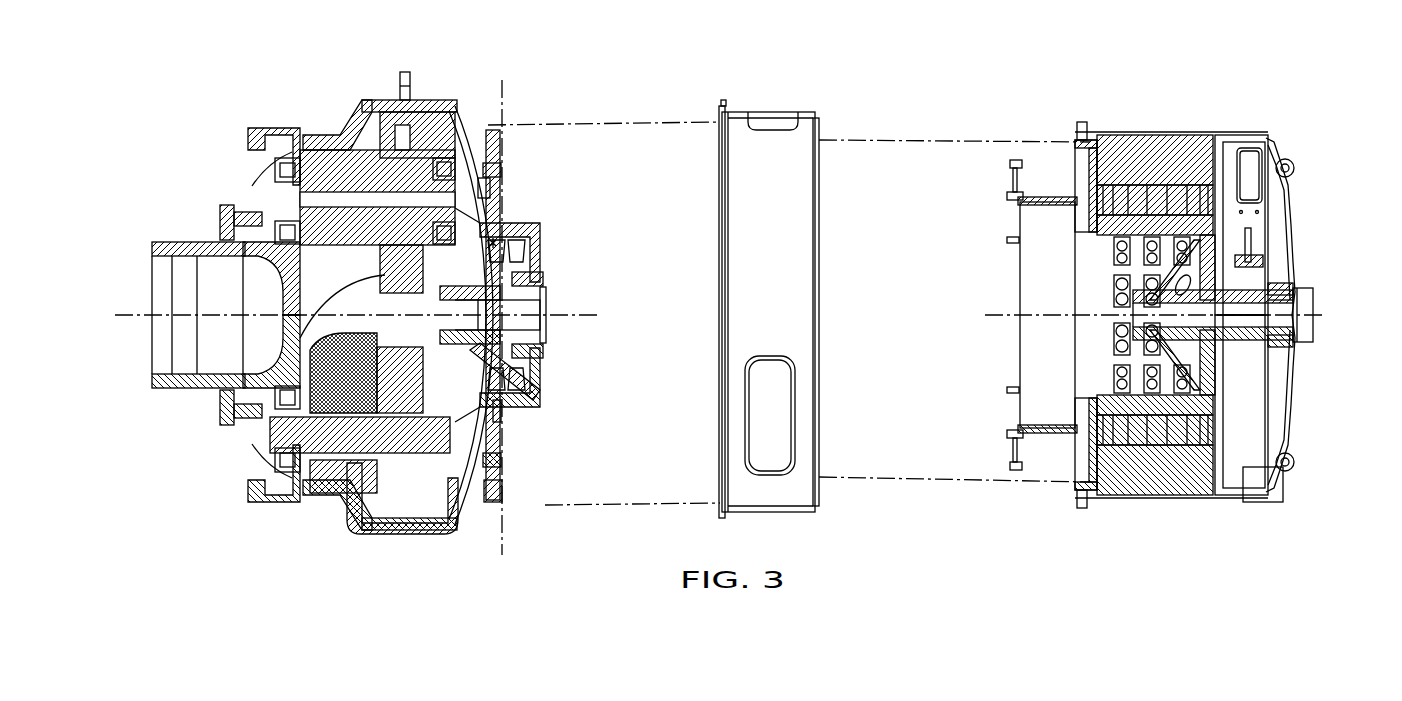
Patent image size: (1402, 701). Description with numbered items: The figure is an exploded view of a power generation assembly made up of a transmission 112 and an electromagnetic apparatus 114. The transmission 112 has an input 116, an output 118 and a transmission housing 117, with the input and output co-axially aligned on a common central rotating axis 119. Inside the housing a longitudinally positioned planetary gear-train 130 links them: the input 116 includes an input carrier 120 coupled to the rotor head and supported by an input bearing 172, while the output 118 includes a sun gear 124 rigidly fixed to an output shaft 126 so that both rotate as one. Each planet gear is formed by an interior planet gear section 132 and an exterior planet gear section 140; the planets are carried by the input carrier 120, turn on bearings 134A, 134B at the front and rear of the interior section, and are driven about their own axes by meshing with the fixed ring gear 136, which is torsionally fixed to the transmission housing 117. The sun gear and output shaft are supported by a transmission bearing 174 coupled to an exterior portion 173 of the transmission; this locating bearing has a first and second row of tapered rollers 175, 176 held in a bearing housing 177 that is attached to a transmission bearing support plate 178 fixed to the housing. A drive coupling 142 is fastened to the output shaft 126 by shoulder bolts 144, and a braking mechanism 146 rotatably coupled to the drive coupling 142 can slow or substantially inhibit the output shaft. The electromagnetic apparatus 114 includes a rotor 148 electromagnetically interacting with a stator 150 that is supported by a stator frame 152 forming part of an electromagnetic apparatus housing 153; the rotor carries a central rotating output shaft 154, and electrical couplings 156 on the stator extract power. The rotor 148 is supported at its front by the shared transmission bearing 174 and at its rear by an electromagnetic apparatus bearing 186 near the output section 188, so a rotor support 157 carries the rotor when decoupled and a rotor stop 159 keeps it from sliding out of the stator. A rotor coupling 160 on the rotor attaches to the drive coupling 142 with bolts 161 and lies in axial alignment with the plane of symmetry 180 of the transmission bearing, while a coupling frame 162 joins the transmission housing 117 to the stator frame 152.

The transmission 112 is at (340, 60).
The electromagnetic apparatus 114 is at (1162, 70).
The input 116 is at (150, 392).
The transmission housing 117 is at (403, 533).
The output 118 is at (573, 333).
The central rotating axis 119 is at (125, 313).
The input carrier 120 is at (177, 242).
The sun gear 124 is at (490, 450).
The output shaft 126 is at (485, 312).
The planetary gear-train 130 is at (300, 110).
The interior planet gear section 132 is at (366, 122).
The bearing 134A is at (268, 228).
The bearing 134B is at (450, 233).
The fixed ring gear 136 is at (342, 133).
The exterior planet gear section 140 is at (423, 233).
The drive coupling 142 is at (540, 247).
The shoulder bolts 144 is at (543, 283).
The braking mechanism 146 is at (498, 500).
The rotor 148 is at (1105, 238).
The stator 150 is at (1150, 188).
The stator frame 152 is at (1110, 135).
The electromagnetic apparatus housing 153 is at (1250, 138).
The central rotating output shaft 154 is at (1301, 288).
The electrical couplings 156 is at (1290, 198).
The rotor support 157 is at (1062, 473).
The rotor stop 159 is at (1080, 475).
The rotor coupling 160 is at (1018, 277).
The bolts 161 is at (1008, 165).
The coupling frame 162 is at (790, 126).
The input bearing 172 is at (227, 198).
The exterior portion 173 is at (528, 148).
The transmission bearing 174 is at (498, 237).
The first row of tapered rollers 175 is at (503, 420).
The second row of tapered rollers 176 is at (525, 403).
The bearing housing 177 is at (513, 237).
The transmission bearing support plate 178 is at (460, 123).
The plane of symmetry 180 is at (507, 537).
The electromagnetic apparatus bearing 186 is at (1295, 348).
The output section 188 is at (1363, 198).